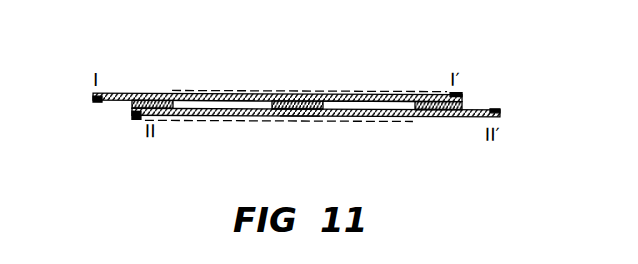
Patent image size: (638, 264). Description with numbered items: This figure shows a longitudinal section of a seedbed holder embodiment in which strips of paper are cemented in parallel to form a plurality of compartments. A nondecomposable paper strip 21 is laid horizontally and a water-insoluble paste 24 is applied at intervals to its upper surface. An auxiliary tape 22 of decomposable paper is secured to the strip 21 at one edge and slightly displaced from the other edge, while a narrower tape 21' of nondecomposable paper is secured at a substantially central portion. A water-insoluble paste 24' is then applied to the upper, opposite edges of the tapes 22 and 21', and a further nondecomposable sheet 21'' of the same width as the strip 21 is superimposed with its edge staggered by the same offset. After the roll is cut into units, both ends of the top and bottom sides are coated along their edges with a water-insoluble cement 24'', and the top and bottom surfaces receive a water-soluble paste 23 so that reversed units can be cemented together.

The nondecomposable paper strip 21 is at (316, 135).
The narrower tape 21' is at (294, 139).
The nondecomposable paper sheet 21'' is at (277, 82).
The auxiliary decomposable paper tape 22 is at (153, 100).
The water-soluble paste 23 is at (253, 91).
The water-insoluble paste 24 is at (265, 135).
The water-insoluble paste 24' is at (354, 77).
The water-insoluble edge cement 24'' is at (308, 103).